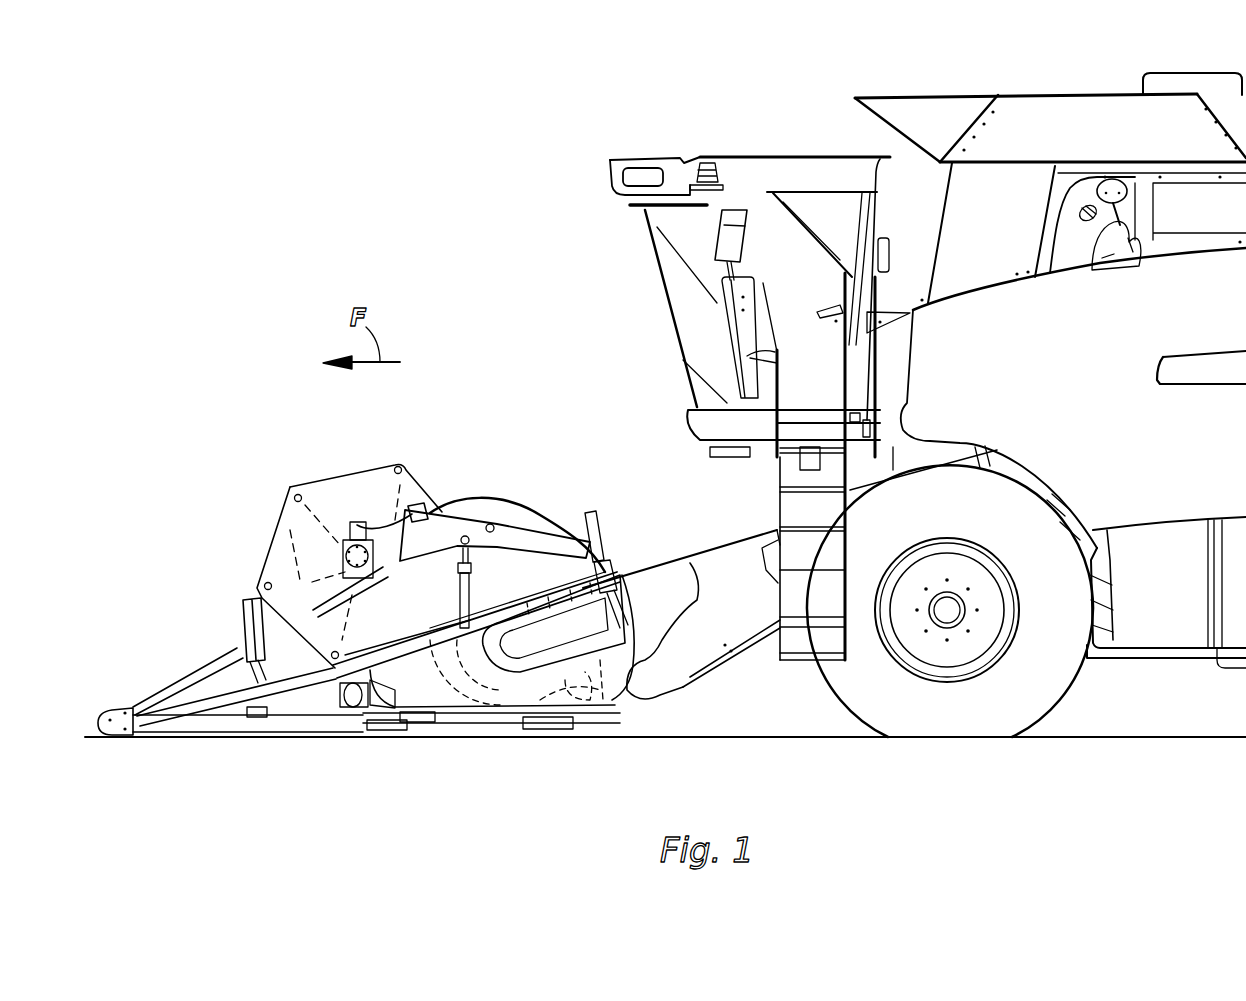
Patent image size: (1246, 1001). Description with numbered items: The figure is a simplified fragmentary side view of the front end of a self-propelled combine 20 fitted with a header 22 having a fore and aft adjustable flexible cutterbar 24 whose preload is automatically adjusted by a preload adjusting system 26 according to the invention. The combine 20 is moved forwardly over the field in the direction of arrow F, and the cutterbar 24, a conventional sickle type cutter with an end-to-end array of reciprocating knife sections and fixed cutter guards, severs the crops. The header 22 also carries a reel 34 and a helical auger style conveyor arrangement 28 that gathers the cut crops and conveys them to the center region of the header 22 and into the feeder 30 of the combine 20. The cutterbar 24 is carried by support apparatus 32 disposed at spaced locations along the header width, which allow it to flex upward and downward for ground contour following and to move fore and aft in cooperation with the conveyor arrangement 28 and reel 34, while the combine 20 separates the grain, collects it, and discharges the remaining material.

The self-propelled combine 20 is at (1034, 80).
The header 22 is at (607, 549).
The flexible cutterbar 24 is at (383, 738).
The preload adjusting system 26 is at (573, 738).
The conveyor arrangement 28 is at (500, 620).
The feeder 30 is at (697, 550).
The support apparatus 32 is at (478, 741).
The reel 34 is at (330, 482).